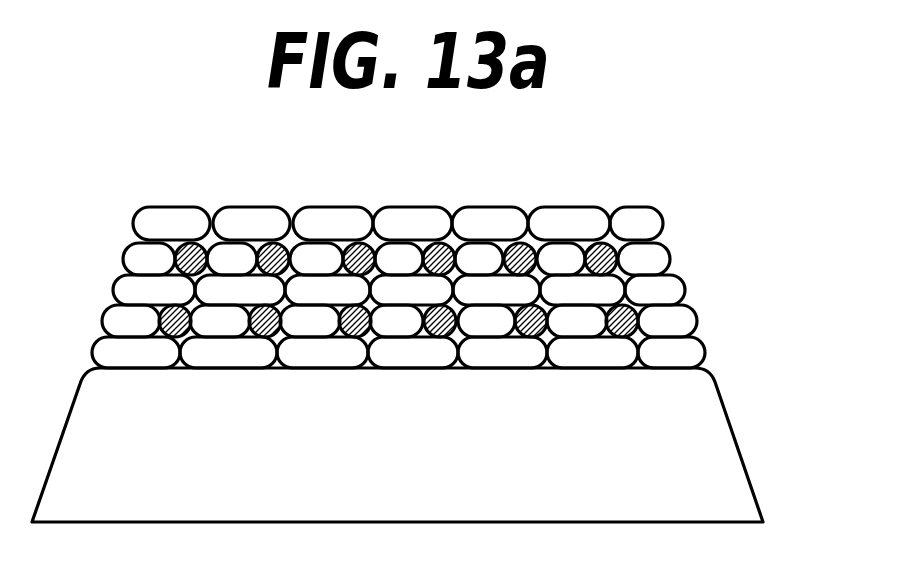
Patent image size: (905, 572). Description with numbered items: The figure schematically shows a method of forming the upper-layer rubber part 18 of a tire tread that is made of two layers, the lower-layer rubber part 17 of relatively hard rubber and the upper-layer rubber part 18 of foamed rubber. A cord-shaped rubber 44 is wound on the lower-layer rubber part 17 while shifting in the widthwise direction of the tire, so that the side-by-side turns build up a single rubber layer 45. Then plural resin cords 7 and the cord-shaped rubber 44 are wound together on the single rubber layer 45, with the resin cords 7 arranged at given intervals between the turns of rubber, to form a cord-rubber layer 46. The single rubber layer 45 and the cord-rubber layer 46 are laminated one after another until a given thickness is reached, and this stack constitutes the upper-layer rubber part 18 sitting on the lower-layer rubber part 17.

The resin cord 7 is at (612, 254).
The lower-layer rubber part 17 is at (717, 448).
The upper-layer rubber part 18 is at (125, 204).
The cord-shaped rubber 44 is at (480, 255).
The single rubber layer 45 is at (732, 356).
The cord-rubber layer 46 is at (722, 324).